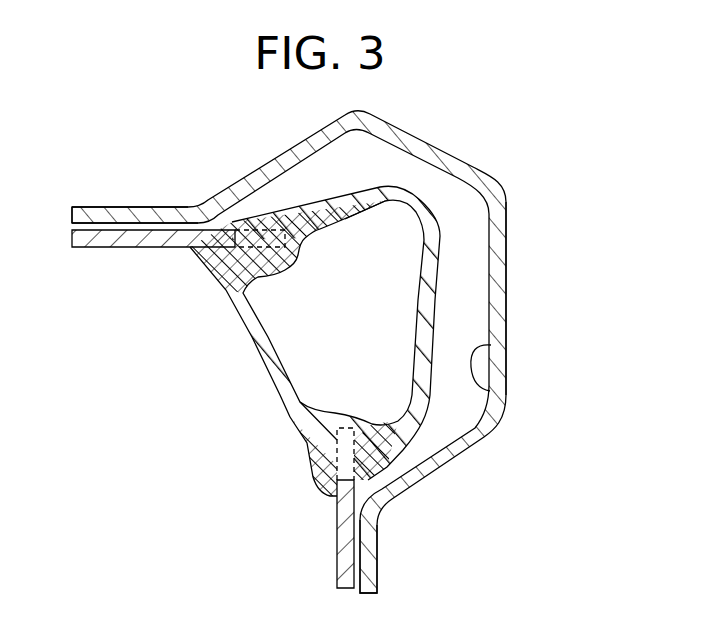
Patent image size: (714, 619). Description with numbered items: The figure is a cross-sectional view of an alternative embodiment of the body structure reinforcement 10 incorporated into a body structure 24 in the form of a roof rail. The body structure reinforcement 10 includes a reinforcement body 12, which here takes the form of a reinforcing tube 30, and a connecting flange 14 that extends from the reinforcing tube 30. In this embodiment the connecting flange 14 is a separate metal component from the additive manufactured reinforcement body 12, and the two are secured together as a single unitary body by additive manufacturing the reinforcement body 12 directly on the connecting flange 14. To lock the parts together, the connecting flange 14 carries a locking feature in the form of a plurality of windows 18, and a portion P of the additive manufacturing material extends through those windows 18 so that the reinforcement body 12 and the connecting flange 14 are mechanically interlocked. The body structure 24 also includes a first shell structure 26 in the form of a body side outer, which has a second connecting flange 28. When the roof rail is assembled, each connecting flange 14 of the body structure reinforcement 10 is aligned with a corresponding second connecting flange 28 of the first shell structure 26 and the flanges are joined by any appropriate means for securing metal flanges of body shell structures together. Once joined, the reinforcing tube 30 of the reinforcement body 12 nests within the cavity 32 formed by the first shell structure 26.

The body structure reinforcement 10 is at (126, 387).
The reinforcement body 12 is at (438, 284).
The connecting flange 14 is at (140, 248).
The windows 18 is at (238, 252).
The body structure 24 is at (507, 154).
The first shell structure 26 is at (508, 318).
The second connecting flange 28 is at (102, 206).
The reinforcing tube 30 is at (347, 219).
The cavity 32 is at (492, 391).
The portion of additive manufacturing material P is at (236, 259).